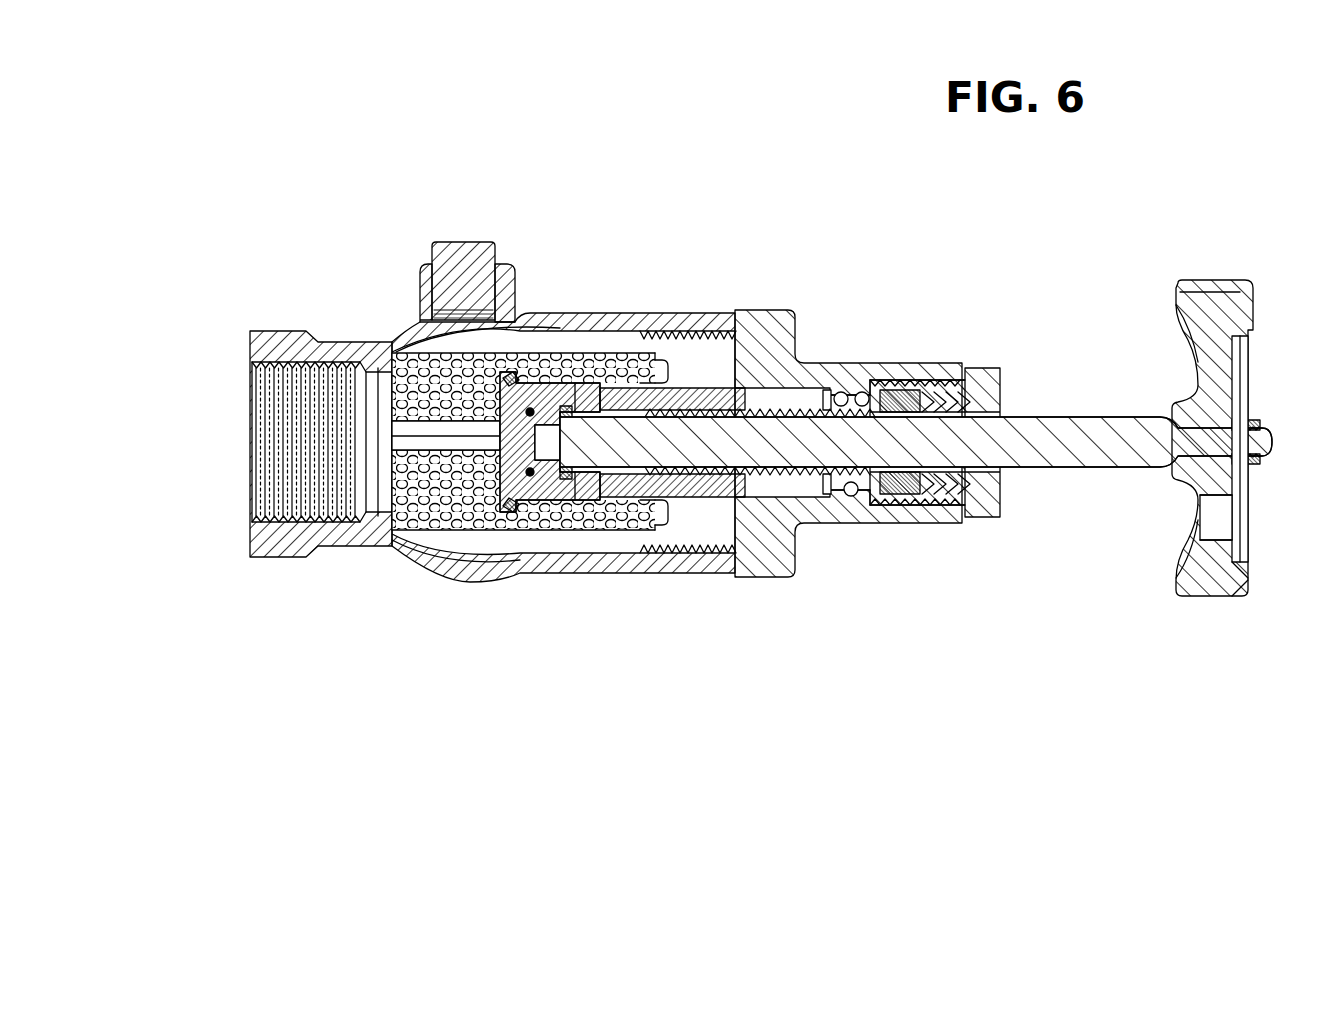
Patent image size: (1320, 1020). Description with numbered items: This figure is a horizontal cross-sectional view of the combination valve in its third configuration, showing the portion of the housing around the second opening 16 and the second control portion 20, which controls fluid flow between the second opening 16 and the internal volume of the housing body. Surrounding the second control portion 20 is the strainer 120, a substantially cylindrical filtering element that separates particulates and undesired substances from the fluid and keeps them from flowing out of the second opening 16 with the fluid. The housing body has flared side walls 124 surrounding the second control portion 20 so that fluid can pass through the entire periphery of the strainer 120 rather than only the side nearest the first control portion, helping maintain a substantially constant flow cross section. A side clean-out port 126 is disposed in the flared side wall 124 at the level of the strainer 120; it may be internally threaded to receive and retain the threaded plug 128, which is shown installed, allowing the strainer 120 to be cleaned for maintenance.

The second opening 16 is at (236, 471).
The second control portion 20 is at (963, 556).
The strainer 120 is at (458, 533).
The flared side walls 124 is at (518, 322).
The side clean-out port 126 is at (413, 291).
The plug 128 is at (476, 260).